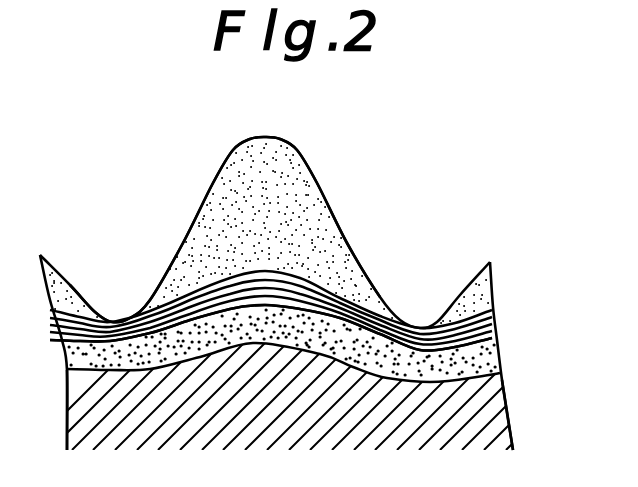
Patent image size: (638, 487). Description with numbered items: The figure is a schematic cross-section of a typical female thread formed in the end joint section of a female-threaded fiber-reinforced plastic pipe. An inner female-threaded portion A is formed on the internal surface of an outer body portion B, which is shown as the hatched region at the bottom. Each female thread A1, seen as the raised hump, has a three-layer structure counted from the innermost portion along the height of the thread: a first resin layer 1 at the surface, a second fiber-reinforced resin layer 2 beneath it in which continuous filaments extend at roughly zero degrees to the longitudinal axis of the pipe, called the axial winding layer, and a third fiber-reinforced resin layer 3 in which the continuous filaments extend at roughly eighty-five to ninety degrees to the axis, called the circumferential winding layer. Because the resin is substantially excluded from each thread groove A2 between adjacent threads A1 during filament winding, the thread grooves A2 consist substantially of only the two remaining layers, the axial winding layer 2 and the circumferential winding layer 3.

The inner female-threaded portion A is at (514, 225).
The female thread A1 is at (305, 146).
The thread groove A2 is at (111, 283).
The first resin layer 1 is at (321, 191).
The second fiber-reinforced resin layer 2 is at (495, 317).
The third fiber-reinforced resin layer 3 is at (502, 354).
The outer body portion B is at (503, 410).